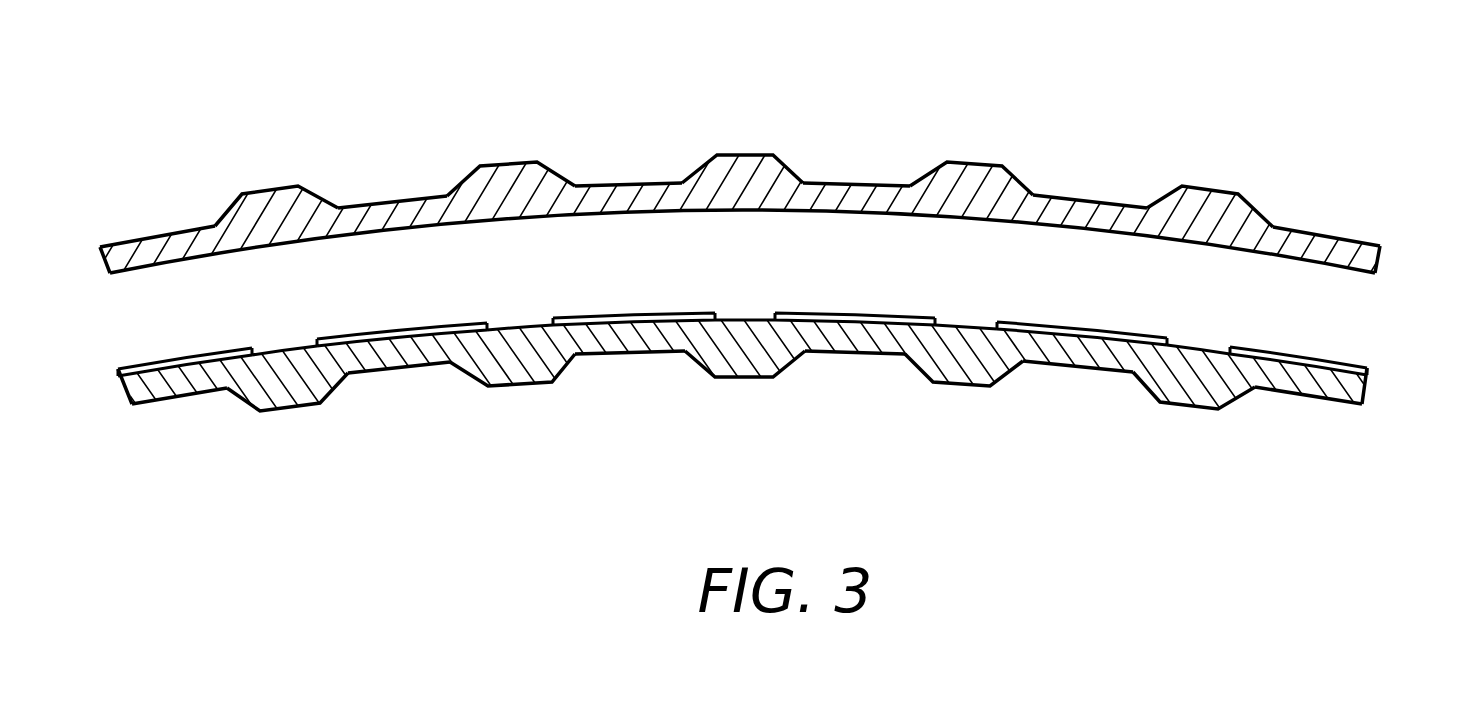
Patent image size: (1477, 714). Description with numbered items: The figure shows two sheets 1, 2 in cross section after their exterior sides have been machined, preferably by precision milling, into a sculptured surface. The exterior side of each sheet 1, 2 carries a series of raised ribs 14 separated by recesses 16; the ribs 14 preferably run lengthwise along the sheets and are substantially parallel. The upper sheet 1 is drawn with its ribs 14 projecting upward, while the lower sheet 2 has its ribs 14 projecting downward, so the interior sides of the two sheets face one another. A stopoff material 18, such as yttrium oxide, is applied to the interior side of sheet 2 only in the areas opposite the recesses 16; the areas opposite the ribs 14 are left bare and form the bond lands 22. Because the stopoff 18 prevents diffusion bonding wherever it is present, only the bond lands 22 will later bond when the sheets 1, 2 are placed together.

The sheet 1 is at (1383, 258).
The sheet 2 is at (1368, 387).
The raised rib 14 is at (256, 186).
The recess 16 is at (833, 185).
The stopoff material 18 is at (367, 326).
The bond land 22 is at (527, 330).